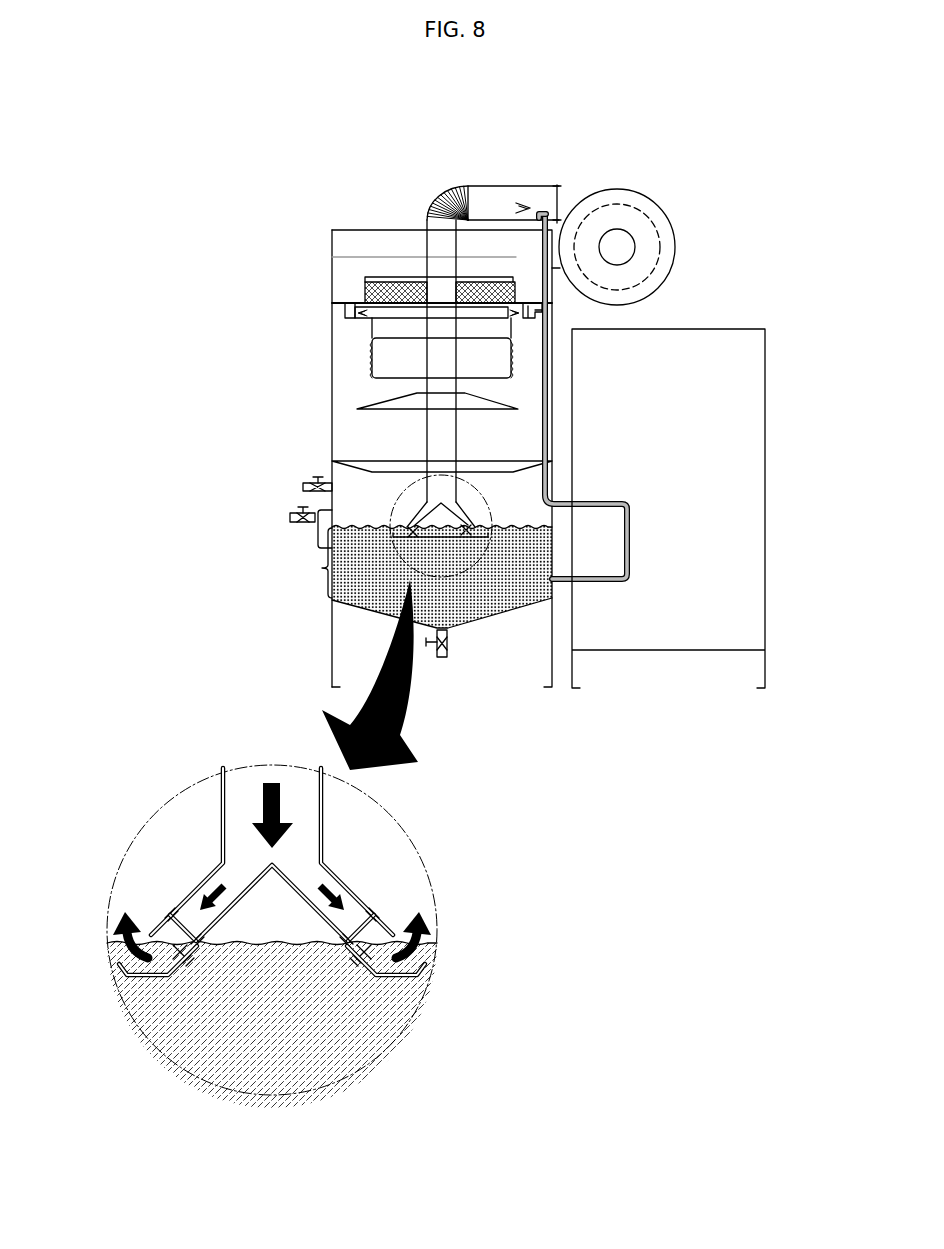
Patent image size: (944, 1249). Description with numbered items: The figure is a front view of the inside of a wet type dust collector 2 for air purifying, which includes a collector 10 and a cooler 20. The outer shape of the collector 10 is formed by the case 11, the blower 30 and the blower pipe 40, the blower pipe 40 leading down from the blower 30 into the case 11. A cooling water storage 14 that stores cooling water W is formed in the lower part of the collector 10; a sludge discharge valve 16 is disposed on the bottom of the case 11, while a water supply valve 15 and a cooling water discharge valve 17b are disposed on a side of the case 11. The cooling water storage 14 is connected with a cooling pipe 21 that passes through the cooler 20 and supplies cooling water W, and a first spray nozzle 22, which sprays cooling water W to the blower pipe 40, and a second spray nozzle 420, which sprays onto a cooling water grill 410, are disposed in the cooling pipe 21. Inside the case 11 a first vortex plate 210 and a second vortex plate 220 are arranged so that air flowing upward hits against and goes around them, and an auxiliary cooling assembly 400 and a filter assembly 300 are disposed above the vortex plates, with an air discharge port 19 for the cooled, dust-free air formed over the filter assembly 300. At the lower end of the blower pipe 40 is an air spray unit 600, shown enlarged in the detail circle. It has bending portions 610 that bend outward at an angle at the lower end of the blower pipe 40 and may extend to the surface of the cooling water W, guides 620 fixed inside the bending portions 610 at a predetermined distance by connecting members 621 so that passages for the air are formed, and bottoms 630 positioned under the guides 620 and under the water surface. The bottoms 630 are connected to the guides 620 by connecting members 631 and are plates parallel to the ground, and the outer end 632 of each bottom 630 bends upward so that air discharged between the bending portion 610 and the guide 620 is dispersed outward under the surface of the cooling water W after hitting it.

The wet type dust collector 2 is at (175, 135).
The collector 10 is at (345, 218).
The case 11 is at (334, 362).
The cooling water storage 14 is at (312, 563).
The water supply valve 15 is at (291, 485).
The sludge discharge valve 16 is at (462, 645).
The cooling water discharge valve 17b is at (279, 522).
The air discharge port 19 is at (397, 240).
The cooler 20 is at (778, 333).
The cooling pipe 21 is at (552, 438).
The first spray nozzle 22 is at (538, 208).
The blower 30 is at (667, 186).
The blower pipe 40 is at (447, 180).
The first vortex plate 210 is at (366, 462).
The second vortex plate 220 is at (358, 409).
The filter assembly 300 is at (379, 279).
The auxiliary cooling assembly 400 is at (512, 324).
The cooling water grill 410 is at (512, 364).
The second spray nozzle 420 is at (560, 322).
The air spray unit 600 is at (261, 866).
The bending portion 610 is at (198, 925).
The guide 620 is at (188, 925).
The connecting member 621 is at (363, 904).
The bottom 630 is at (108, 943).
The connecting member 631 is at (373, 920).
The outer end 632 is at (118, 968).
The cooling water W is at (366, 600).